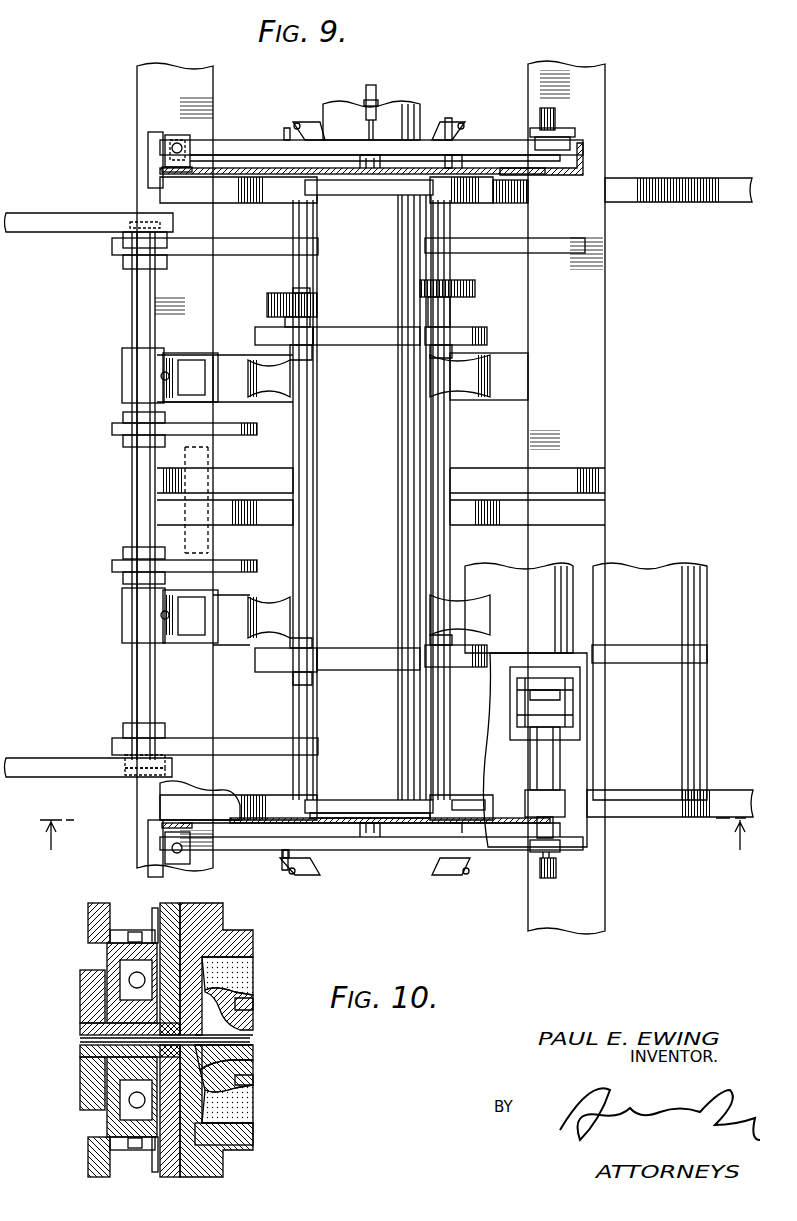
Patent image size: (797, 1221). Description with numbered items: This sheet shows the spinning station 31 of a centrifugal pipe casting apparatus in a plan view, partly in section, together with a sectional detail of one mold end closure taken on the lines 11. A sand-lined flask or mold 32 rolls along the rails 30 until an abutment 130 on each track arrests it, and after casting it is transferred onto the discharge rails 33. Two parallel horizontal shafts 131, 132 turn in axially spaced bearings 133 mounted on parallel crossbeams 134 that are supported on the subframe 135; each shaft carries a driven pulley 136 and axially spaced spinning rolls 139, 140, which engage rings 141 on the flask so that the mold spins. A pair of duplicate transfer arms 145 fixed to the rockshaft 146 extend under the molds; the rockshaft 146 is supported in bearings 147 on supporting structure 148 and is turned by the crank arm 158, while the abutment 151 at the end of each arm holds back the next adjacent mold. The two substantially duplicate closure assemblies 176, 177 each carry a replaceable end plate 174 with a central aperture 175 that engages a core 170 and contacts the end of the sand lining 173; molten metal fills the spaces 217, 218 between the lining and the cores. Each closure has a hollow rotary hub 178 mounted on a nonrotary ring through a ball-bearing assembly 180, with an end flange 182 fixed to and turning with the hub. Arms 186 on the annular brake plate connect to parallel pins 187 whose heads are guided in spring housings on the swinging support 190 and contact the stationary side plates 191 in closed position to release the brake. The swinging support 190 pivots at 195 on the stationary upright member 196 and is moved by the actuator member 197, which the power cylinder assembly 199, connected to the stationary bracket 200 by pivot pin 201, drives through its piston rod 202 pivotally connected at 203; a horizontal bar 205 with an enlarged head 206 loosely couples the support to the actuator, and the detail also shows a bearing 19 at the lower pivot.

In FIG. 9, the section line 11- 11 is at (393, 847).
In FIG. 9, the bearing 19 is at (165, 846).
In FIG. 9, the rails 30 is at (700, 180).
In FIG. 9, the spinning station 31 is at (469, 59).
In FIG. 9, the sand-lined flask or mold 32 is at (720, 698).
In FIG. 10, the sand-lined flask or mold 32 is at (241, 931).
In FIG. 9, the discharge rails or tracks 33 is at (16, 214).
In FIG. 9, the abutment 130 is at (506, 198).
In FIG. 9, the horizontal shaft 131 is at (293, 457).
In FIG. 9, the horizontal shaft 132 is at (443, 457).
In FIG. 9, the bearings 133 is at (290, 378).
In FIG. 9, the crossbeams 134 is at (510, 350).
In FIG. 9, the subframe 135 is at (142, 88).
In FIG. 9, the driven pulley 136 is at (270, 294).
In FIG. 9, the spinning rolls 139 is at (256, 330).
In FIG. 9, the spinning rolls 140 is at (460, 330).
In FIG. 9, the rings 141 is at (356, 326).
In FIG. 9, the transfer arms 145 is at (242, 250).
In FIG. 9, the rockshaft 146 is at (134, 686).
In FIG. 9, the bearings 147 is at (124, 376).
In FIG. 9, the supporting structure 148 is at (185, 355).
In FIG. 9, the abutment 151 is at (586, 244).
In FIG. 9, the crank arm 158 is at (235, 425).
In FIG. 10, the core 170 is at (250, 996).
In FIG. 10, the sand lining 173 is at (238, 970).
In FIG. 10, the replaceable end plates 174 is at (240, 1056).
In FIG. 10, the central aperture 175 is at (80, 1038).
In FIG. 9, the closure assembly 176 is at (501, 866).
In FIG. 9, the closure assembly 177 is at (239, 135).
In FIG. 10, the hollow rotary hub 178 is at (170, 908).
In FIG. 10, the ball-bearing assembly 180 is at (130, 975).
In FIG. 10, the end flange 182 is at (80, 994).
In FIG. 9, the arms 186 is at (296, 120).
In FIG. 9, the pins 187 is at (455, 125).
In FIG. 9, the swinging support 190 is at (490, 150).
In FIG. 10, the swinging support 190 is at (88, 926).
In FIG. 9, the stationary side plates 191 is at (566, 182).
In FIG. 9, the pivot 195 is at (165, 143).
In FIG. 9, the stationary upright member 196 is at (160, 163).
In FIG. 9, the actuator member 197 is at (556, 114).
In FIG. 9, the power cylinder assembly 199 is at (569, 766).
In FIG. 9, the stationary bracket 200 is at (570, 700).
In FIG. 9, the pivot pin 201 is at (548, 692).
In FIG. 9, the piston rod 202 is at (535, 832).
In FIG. 9, the pivot 203 is at (565, 854).
In FIG. 9, the horizontal bar 205 is at (572, 145).
In FIG. 9, the enlarged head 206 is at (577, 133).
In FIG. 10, the space 217 is at (250, 1080).
In FIG. 9, the space 218 is at (378, 88).